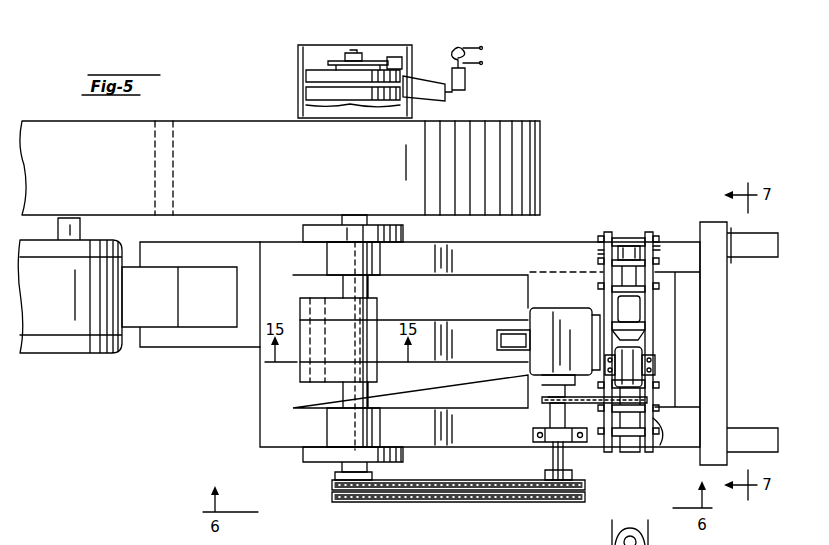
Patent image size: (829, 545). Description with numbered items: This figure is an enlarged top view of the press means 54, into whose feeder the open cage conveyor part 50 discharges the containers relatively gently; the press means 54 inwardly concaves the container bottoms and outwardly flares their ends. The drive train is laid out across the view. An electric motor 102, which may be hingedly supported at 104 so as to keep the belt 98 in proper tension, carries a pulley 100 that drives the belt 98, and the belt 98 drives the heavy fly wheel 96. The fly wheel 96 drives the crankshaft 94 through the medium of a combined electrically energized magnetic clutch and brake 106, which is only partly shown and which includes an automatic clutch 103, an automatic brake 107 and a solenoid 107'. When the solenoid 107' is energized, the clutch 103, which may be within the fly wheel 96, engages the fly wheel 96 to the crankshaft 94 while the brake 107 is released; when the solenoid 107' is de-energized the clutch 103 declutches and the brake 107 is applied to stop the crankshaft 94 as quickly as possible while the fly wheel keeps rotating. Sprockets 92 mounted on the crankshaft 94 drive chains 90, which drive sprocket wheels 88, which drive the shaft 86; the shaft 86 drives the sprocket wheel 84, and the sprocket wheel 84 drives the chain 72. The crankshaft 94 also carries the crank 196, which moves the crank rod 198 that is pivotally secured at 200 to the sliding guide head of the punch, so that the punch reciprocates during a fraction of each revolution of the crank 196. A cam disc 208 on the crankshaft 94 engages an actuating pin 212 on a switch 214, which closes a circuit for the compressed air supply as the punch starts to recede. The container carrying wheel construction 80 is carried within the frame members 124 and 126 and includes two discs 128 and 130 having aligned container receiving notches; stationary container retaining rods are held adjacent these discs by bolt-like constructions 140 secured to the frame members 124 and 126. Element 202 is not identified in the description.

The open cage conveyor part 50 is at (612, 532).
The press means 54 is at (659, 128).
The chain 72 is at (583, 405).
The container carrying wheel construction 80 is at (622, 215).
The sprocket wheel 84 is at (545, 400).
The shaft 86 is at (553, 453).
The sprocket wheels 88 is at (580, 486).
The chains 90 is at (428, 480).
The sprockets 92 is at (335, 478).
The crankshaft 94 is at (365, 283).
The fly wheel 96 is at (505, 165).
The belt 98 is at (162, 124).
The pulley 100 is at (62, 133).
The electric motor 102 is at (37, 352).
The automatic clutch 103 is at (306, 93).
The hinged support 104 is at (133, 322).
The combined magnetic clutch and brake 106 is at (283, 56).
The automatic brake 107 is at (324, 72).
The solenoid 107' is at (465, 74).
The frame member 124 is at (653, 248).
The frame member 126 is at (605, 252).
The disc 128 is at (645, 238).
The disc 130 is at (618, 240).
The bolt-like constructions 140 is at (660, 442).
The crank 196 is at (315, 367).
The crank rod 198 is at (435, 322).
The pivot 200 is at (515, 322).
The motor 202 is at (535, 357).
The cam disc 208 is at (333, 60).
The actuating pin 212 is at (386, 60).
The switch 214 is at (398, 58).